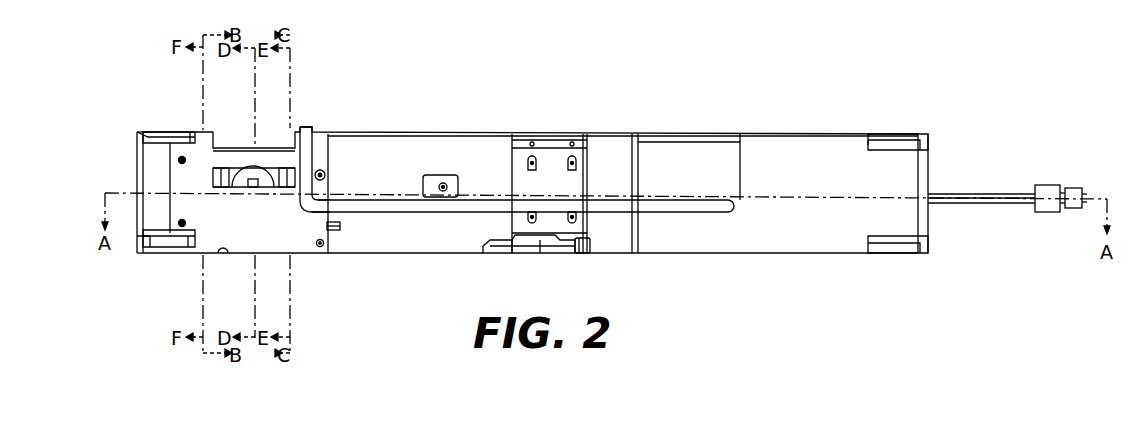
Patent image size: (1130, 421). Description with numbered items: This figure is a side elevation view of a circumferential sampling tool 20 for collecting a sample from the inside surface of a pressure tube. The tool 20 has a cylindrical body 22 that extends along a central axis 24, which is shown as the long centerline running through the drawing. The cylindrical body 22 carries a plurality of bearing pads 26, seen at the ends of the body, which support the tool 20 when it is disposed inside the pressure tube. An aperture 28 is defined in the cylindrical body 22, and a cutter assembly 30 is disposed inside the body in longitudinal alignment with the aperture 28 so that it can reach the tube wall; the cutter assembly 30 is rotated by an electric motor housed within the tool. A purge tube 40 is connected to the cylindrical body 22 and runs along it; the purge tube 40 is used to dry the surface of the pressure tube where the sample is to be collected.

The circumferential sampling tool 20 is at (160, 247).
The cylindrical body 22 is at (470, 254).
The central axis 24 is at (764, 197).
The bearing pads 26 is at (172, 135).
The aperture 28 is at (280, 135).
The cutter assembly 30 is at (247, 158).
The purge tube 40 is at (372, 213).